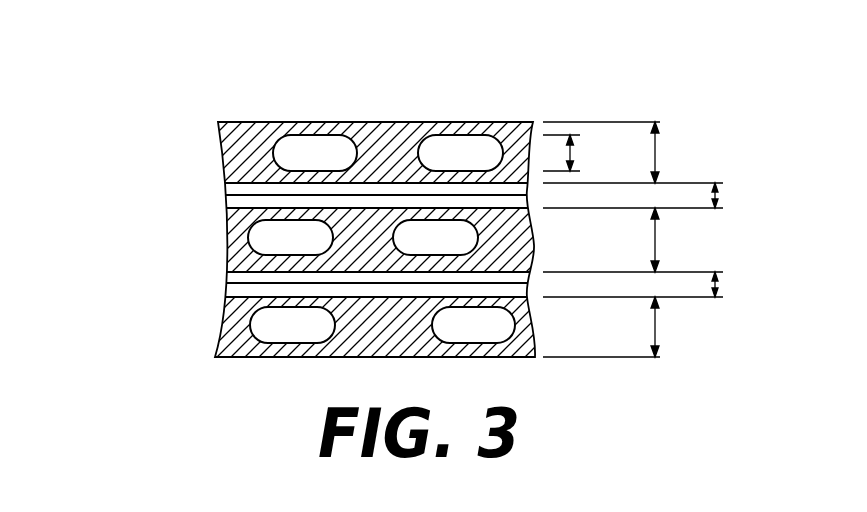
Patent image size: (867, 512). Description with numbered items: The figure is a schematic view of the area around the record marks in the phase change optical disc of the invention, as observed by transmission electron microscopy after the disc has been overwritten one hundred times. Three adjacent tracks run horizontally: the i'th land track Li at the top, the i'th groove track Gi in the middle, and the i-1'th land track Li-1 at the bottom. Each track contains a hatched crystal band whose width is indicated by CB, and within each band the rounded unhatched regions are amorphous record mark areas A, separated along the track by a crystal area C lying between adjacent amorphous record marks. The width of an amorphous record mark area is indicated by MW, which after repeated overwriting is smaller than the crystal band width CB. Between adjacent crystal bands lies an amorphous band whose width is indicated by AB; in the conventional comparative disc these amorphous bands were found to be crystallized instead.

The amorphous record mark area A is at (311, 143).
The crystal area C is at (397, 143).
The width of amorphous record mark area MW is at (594, 153).
The width of crystal band CB is at (633, 239).
The width of amorphous band AB is at (744, 241).
The i'th land track Li is at (222, 195).
The i'th groove track Gi is at (226, 283).
The i-1'th land track Li-1 is at (214, 357).